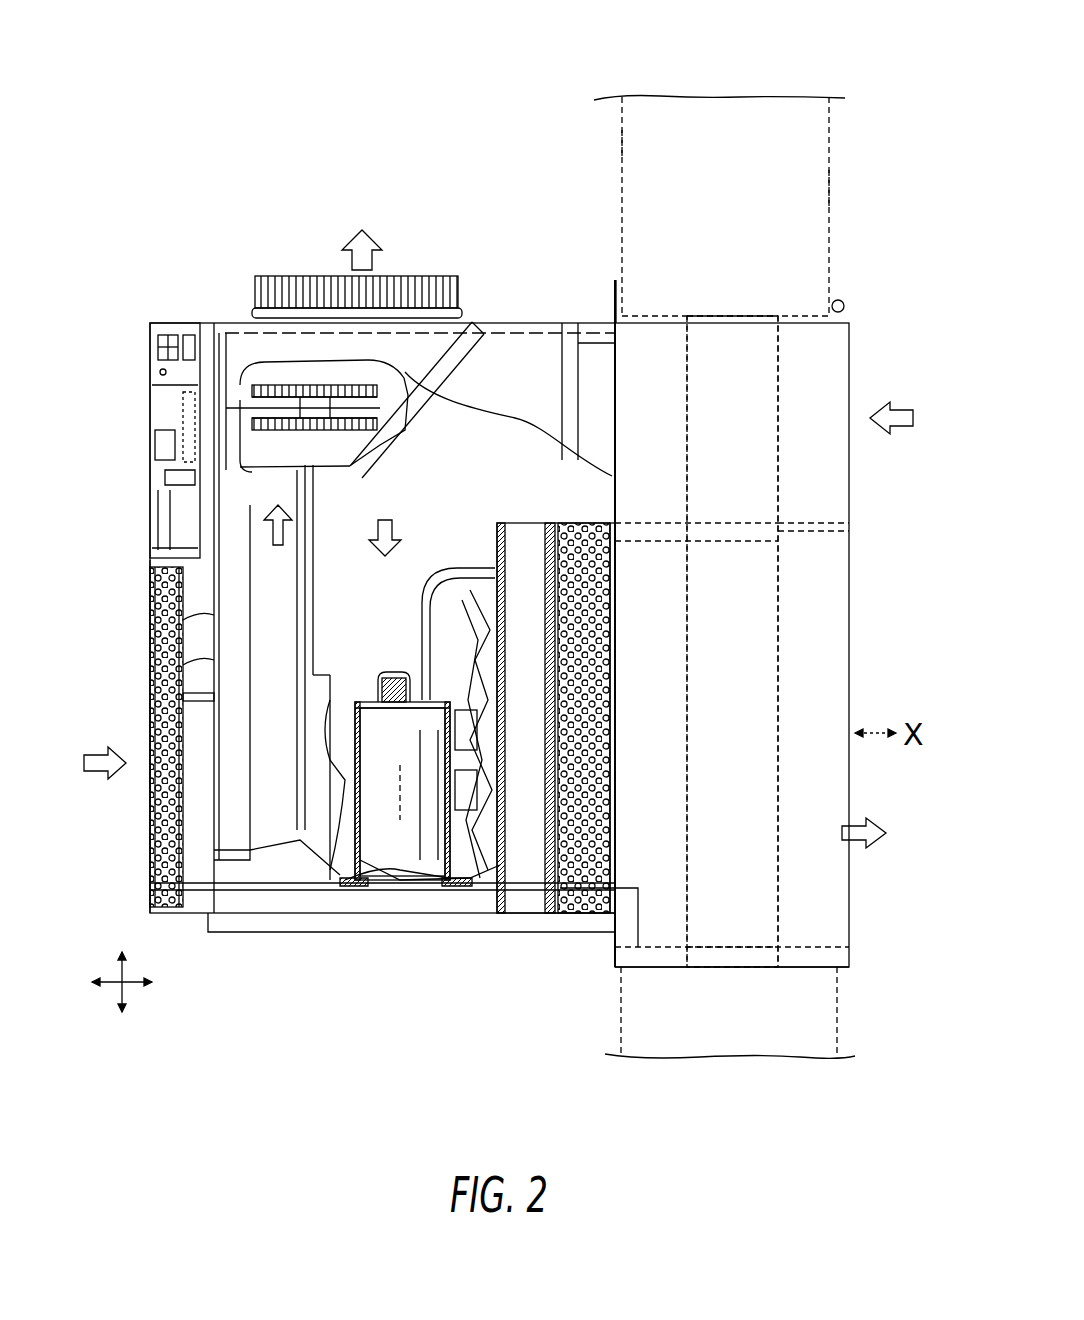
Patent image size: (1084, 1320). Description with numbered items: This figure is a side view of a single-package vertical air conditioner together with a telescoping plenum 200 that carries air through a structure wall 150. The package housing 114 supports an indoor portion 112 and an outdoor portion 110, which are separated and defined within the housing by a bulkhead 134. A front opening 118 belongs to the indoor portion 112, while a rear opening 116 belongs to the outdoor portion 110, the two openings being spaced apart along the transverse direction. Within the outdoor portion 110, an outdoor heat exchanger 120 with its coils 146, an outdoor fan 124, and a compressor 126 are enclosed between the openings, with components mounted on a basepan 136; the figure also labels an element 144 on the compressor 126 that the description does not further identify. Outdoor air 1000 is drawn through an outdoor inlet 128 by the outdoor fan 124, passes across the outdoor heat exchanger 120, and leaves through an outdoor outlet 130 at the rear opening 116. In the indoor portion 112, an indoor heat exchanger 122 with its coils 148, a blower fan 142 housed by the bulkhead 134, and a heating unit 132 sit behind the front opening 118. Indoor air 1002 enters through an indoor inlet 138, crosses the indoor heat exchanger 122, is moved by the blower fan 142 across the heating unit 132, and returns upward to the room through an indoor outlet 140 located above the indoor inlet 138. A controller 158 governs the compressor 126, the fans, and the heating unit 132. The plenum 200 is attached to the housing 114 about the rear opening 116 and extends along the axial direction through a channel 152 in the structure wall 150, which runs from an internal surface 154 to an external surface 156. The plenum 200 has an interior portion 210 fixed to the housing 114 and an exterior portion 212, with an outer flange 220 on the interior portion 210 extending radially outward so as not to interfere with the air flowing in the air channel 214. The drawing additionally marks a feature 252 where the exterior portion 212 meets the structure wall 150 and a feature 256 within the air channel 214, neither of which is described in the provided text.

The outdoor portion 110 is at (435, 466).
The indoor portion 112 is at (230, 825).
The package housing 114 is at (525, 322).
The rear opening 116 is at (618, 826).
The front opening 118 is at (150, 843).
The outdoor heat exchanger 120 is at (592, 522).
The indoor heat exchanger 122 is at (185, 630).
The outdoor fan 124 is at (478, 612).
The compressor 126 is at (375, 722).
The outdoor inlet 128 is at (600, 492).
The outdoor outlet 130 is at (620, 771).
The heating unit 132 is at (320, 430).
The bulkhead 134 is at (315, 575).
The basepan 136 is at (222, 925).
The indoor inlet 138 is at (148, 797).
The indoor outlet 140 is at (404, 273).
The blower fan 142 is at (190, 695).
The motor mount 144 is at (393, 682).
The coils 146 is at (558, 553).
The coils 148 is at (185, 668).
The structure wall 150 is at (772, 112).
The channel 152 is at (658, 316).
The internal surface 154 is at (622, 148).
The external surface 156 is at (833, 196).
The controller 158 is at (180, 408).
The plenum 200 is at (600, 966).
The interior portion 210 is at (655, 910).
The exterior portion 212 is at (832, 352).
The air channel 214 is at (736, 880).
The outer flange 220 is at (614, 300).
The connection 252 is at (840, 312).
The divider 256 is at (725, 523).
The outdoor air 1000 is at (388, 536).
The indoor air 1002 is at (400, 215).